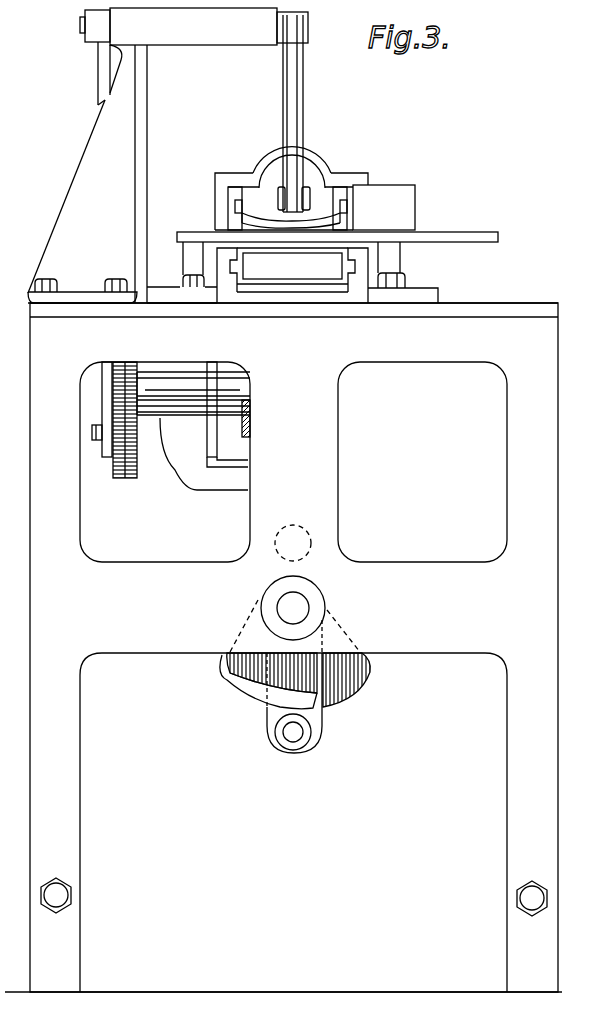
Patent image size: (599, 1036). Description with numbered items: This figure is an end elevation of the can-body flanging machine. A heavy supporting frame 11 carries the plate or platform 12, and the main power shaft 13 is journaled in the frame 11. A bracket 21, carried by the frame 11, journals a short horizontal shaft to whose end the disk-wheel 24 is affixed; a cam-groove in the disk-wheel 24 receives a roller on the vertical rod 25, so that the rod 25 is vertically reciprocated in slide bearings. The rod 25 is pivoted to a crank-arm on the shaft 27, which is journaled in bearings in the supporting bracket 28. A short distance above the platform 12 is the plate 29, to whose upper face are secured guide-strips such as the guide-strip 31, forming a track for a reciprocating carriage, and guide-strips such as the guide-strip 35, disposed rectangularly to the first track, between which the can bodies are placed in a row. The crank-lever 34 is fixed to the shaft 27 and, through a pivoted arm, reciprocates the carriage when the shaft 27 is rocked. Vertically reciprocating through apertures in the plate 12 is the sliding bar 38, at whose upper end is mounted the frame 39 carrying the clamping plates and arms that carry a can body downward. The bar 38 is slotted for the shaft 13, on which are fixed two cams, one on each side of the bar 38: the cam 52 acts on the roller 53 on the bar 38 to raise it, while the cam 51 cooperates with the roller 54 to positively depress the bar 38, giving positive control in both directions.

The supporting frame 11 is at (558, 592).
The plate or platform 12 is at (538, 290).
The main power shaft 13 is at (300, 609).
The bracket 21 is at (225, 482).
The disk-wheel 24 is at (137, 473).
The vertical rod 25 is at (100, 72).
The shaft 27 is at (80, 22).
The supporting bracket 28 is at (123, 155).
The plate 29 is at (508, 228).
The guide-strip 31 is at (352, 205).
The crank-lever 34 is at (298, 110).
The guide-strip 35 is at (415, 205).
The sliding bar 38 is at (267, 730).
The frame 39 is at (332, 162).
The cam 51 is at (232, 690).
The cam 52 is at (357, 692).
The roller 53 is at (292, 527).
The roller 54 is at (308, 737).